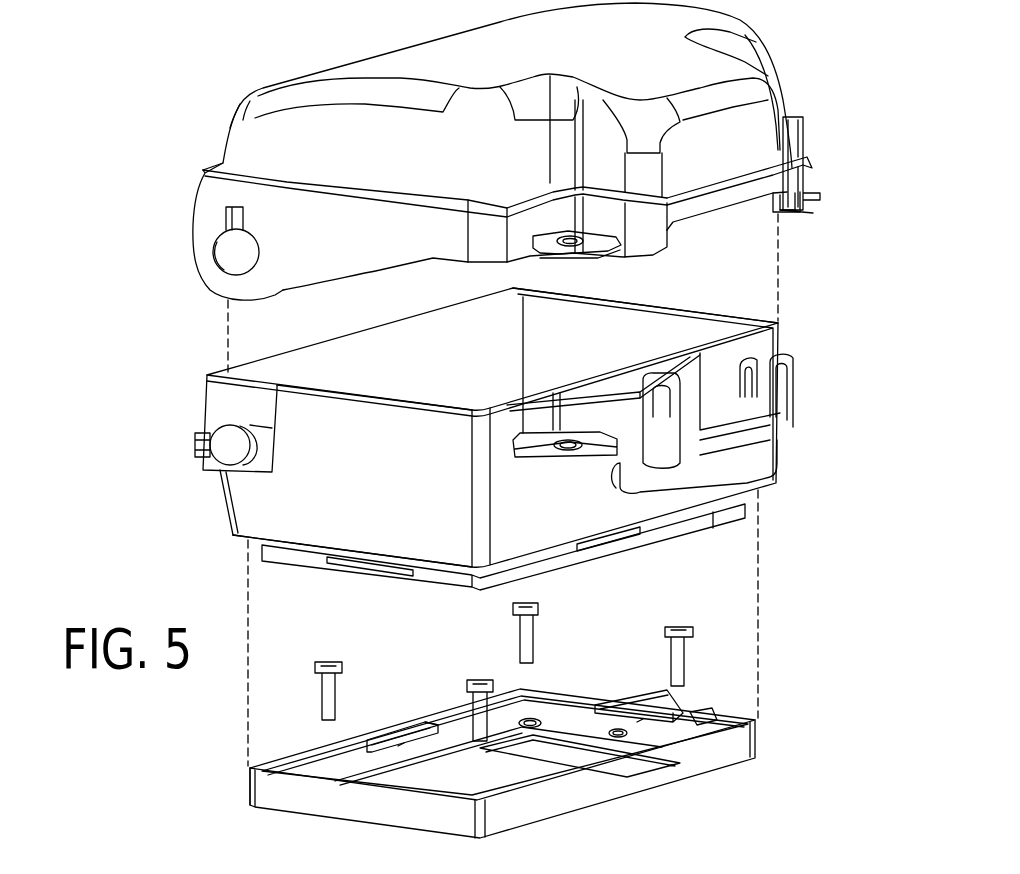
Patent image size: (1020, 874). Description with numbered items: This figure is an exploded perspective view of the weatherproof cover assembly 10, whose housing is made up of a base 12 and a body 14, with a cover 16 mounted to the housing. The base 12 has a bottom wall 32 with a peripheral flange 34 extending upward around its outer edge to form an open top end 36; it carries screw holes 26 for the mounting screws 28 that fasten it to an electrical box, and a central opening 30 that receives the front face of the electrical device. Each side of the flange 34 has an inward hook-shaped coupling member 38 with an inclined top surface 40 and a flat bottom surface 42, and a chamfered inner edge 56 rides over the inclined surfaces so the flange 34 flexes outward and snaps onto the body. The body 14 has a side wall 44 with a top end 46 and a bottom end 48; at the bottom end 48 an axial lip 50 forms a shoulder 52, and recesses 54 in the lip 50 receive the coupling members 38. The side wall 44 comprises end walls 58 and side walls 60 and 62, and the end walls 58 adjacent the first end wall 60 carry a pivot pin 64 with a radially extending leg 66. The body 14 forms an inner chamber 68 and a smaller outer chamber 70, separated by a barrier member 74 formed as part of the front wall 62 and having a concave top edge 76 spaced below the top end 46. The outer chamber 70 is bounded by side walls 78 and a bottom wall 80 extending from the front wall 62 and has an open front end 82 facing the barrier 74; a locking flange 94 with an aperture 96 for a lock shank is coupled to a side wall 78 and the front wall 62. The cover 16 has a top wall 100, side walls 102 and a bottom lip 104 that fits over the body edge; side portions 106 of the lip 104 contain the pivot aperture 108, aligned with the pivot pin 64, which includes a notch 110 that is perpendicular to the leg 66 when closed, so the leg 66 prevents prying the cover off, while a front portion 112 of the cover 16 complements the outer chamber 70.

The weatherproof cover assembly 10 is at (175, 510).
The base 12 is at (772, 766).
The body 14 is at (788, 325).
The cover 16 is at (768, 23).
The screw holes 26 is at (532, 720).
The mounting screws 28 is at (320, 698).
The central opening 30 is at (482, 757).
The bottom wall 32 is at (362, 770).
The peripheral flange 34 is at (280, 757).
The open top end 36 is at (312, 763).
The hook-shaped coupling member 38 is at (435, 730).
The inclined top surface 40 is at (397, 737).
The flat bottom surface 42 is at (400, 747).
The side wall 44 is at (248, 521).
The top end 46 is at (322, 342).
The bottom end 48 is at (233, 560).
The axial lip 50 is at (300, 572).
The shoulder 52 is at (432, 577).
The recess 54 is at (372, 577).
The chamfered inner edge 56 is at (727, 712).
The end walls 58 is at (360, 440).
The first end wall 60 is at (428, 347).
The front wall 62 is at (763, 471).
The pivot pin 64 is at (203, 427).
The radially extending leg 66 is at (190, 440).
The inner chamber 68 is at (608, 335).
The outer chamber 70 is at (735, 372).
The barrier member 74 is at (622, 393).
The top edge 76 is at (628, 392).
The side walls of outer chamber 78 is at (792, 350).
The bottom wall of outer chamber 80 is at (657, 488).
The open front end 82 is at (745, 437).
The locking flange 94 is at (543, 460).
The aperture 96 is at (540, 433).
The top wall 100 is at (462, 62).
The side walls 102 is at (280, 137).
The bottom lip 104 is at (722, 200).
The side portions 106 is at (233, 307).
The aperture 108 is at (234, 253).
The notch 110 is at (228, 218).
The front portion 112 is at (770, 124).